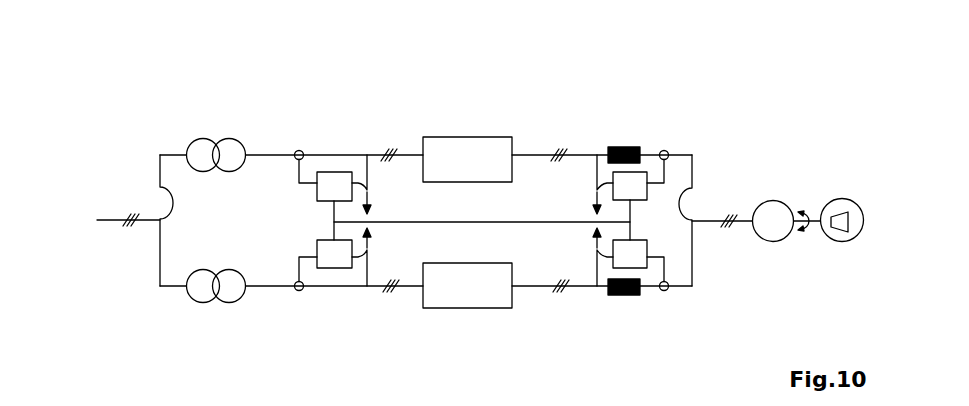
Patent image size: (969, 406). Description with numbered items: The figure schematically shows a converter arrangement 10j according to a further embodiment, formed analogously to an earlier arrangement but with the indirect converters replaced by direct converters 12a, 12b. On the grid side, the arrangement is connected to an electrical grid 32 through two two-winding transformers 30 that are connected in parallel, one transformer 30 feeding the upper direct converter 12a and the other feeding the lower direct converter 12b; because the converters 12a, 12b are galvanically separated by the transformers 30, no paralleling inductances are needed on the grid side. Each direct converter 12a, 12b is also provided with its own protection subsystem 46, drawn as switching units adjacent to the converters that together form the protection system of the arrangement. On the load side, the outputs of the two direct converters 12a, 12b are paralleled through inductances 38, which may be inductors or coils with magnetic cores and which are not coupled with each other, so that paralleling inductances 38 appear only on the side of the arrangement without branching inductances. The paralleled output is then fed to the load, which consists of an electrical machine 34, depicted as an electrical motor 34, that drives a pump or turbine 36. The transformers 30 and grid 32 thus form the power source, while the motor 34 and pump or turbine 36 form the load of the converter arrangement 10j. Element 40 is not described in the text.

The converter arrangement 10j is at (728, 77).
The transformer 30 is at (215, 139).
The electrical grid 32 is at (120, 221).
The bus bar 40 is at (160, 190).
The protection subsystem 46 is at (335, 172).
The direct converter 12a is at (468, 137).
The direct converter 12b is at (450, 308).
The inductance 38 is at (622, 147).
The electrical machine 34 is at (777, 242).
The pump or turbine 36 is at (847, 242).